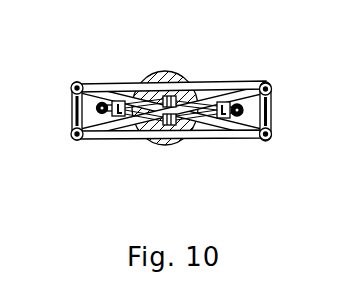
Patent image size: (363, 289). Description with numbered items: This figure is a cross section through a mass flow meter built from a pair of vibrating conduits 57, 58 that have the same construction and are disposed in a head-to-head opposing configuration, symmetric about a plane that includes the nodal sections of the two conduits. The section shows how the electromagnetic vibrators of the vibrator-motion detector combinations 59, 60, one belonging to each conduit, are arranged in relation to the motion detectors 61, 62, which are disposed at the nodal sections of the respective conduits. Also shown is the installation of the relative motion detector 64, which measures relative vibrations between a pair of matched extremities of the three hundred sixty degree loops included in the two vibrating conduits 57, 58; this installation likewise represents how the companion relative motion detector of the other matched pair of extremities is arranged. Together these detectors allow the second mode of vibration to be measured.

The vibrating conduit 57 is at (110, 143).
The vibrating conduit 58 is at (213, 88).
The electromagnetic vibrator or vibrator-motion detector combination 59 is at (68, 110).
The electromagnetic vibrator or vibrator-motion detector combination 60 is at (276, 110).
The motion detector 61 is at (121, 117).
The motion detector 62 is at (221, 106).
The relative motion detector 64 is at (148, 85).